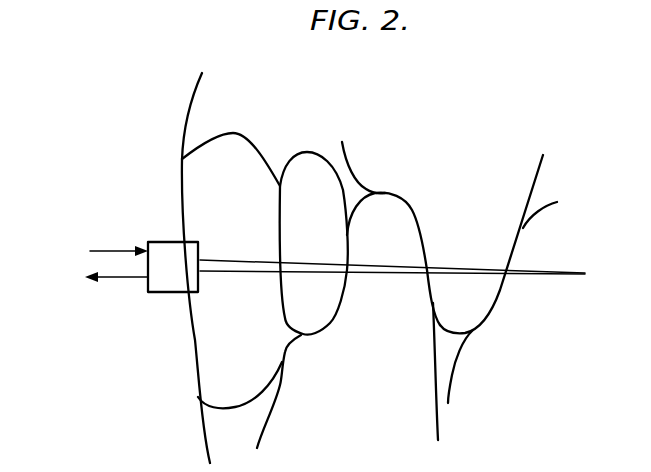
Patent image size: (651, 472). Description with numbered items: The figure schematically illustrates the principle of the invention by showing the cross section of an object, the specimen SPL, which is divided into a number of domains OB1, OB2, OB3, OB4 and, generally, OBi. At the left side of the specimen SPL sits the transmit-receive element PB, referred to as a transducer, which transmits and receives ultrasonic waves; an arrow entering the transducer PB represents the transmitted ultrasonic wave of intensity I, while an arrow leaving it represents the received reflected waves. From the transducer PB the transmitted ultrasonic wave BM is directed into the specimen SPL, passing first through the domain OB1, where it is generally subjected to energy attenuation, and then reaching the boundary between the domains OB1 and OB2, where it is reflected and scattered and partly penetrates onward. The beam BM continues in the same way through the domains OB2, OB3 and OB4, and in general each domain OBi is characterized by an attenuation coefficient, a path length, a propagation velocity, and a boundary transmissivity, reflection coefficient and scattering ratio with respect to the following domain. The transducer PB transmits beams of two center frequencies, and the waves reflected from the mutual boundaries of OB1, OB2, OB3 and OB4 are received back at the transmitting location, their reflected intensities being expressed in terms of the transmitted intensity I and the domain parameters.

The specimen SPL is at (251, 97).
The domain OB1 is at (232, 270).
The domain OB2 is at (314, 243).
The domain OB3 is at (310, 391).
The domain OB4 is at (412, 233).
The domain OBi is at (495, 297).
The transmitted ultrasonic wave BM is at (567, 273).
The transmit-receive element PB is at (141, 267).
The intensity of transmitted ultrasonic wave I is at (163, 242).